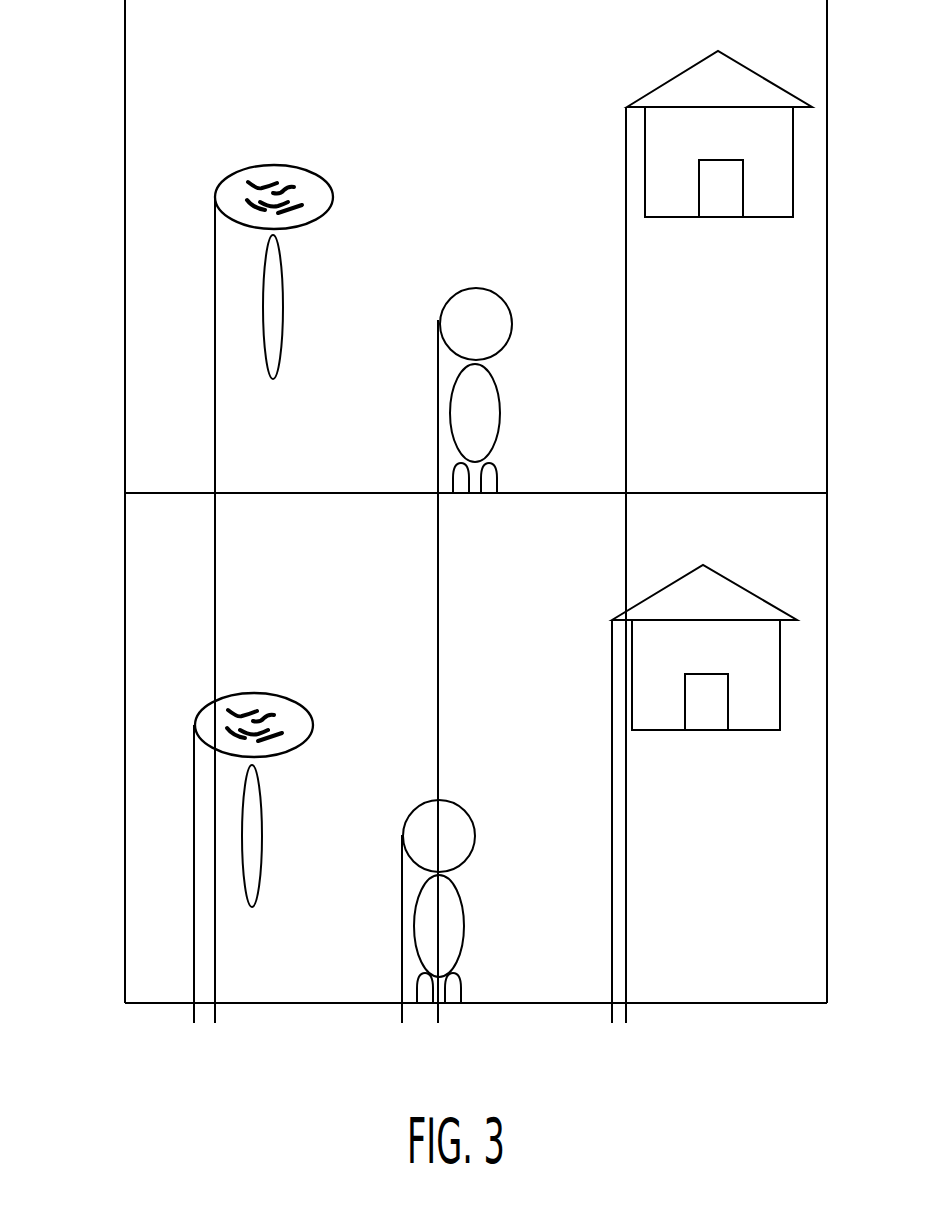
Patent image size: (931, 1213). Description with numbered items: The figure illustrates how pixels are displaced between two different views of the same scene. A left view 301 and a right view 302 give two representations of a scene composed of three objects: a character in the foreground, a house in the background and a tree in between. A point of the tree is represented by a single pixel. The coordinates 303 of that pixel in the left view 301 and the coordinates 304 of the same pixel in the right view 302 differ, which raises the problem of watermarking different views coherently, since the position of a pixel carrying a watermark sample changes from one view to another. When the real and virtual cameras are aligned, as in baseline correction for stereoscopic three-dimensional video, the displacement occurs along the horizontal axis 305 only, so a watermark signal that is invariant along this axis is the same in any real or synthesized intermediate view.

The left view 301 is at (137, 45).
The right view 302 is at (135, 556).
The coordinates of pixel P1 in the left view 303 is at (218, 185).
The coordinates of pixel P1 in the right view 304 is at (197, 718).
The horizontal axis 305 is at (138, 963).